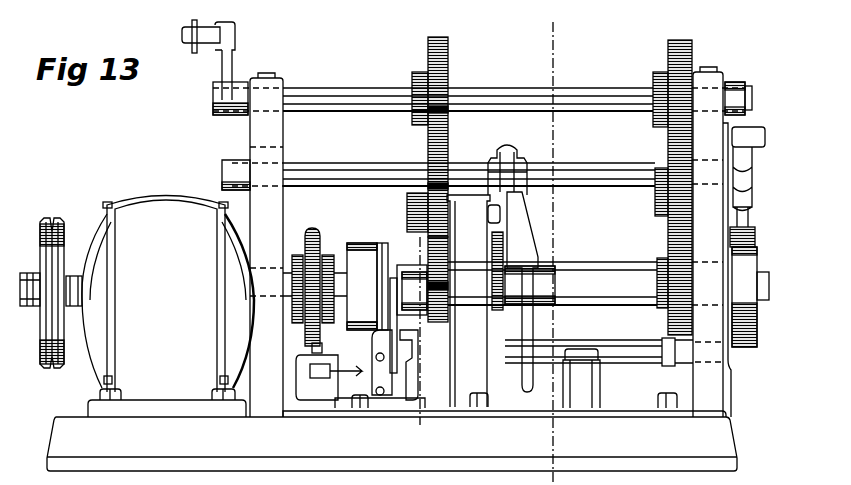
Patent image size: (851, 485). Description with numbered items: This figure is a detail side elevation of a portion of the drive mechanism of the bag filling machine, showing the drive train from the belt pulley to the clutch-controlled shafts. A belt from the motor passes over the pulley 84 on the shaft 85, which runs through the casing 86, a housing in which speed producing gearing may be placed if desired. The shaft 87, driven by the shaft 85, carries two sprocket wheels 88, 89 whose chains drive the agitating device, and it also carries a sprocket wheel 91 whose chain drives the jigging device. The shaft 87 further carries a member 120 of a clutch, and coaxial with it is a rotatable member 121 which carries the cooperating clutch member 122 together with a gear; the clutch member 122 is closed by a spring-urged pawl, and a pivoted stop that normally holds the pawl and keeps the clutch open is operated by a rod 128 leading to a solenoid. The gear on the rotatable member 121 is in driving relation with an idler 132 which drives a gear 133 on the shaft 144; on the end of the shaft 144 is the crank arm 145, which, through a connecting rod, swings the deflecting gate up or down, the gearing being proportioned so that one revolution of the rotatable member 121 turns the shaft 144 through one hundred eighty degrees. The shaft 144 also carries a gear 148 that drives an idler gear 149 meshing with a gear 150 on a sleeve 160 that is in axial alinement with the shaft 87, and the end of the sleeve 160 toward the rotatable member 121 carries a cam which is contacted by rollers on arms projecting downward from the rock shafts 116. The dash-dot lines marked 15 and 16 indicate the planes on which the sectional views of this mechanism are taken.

The crank arm 145 is at (232, 62).
The shaft 144 is at (355, 95).
The gear 133 is at (448, 62).
The section line 15- 15 is at (506, 22).
The gear 148 is at (668, 58).
The rock shaft 116 is at (334, 170).
The idler 132 is at (490, 160).
The idler gear 149 is at (668, 224).
The pulley 84 is at (57, 223).
The casing 86 is at (124, 204).
The shaft 87 is at (292, 272).
The sprocket wheel 91 is at (310, 234).
The clutch member 120 is at (365, 257).
The clutch member 122 is at (382, 252).
The section line 16- 16 is at (405, 237).
The rotatable member 121 is at (408, 269).
The shaft 85 is at (32, 306).
The sprocket wheel 88 is at (296, 326).
The sprocket wheel 89 is at (328, 322).
The rod 128 is at (445, 327).
The sleeve 160 is at (573, 307).
The gear 150 is at (668, 341).